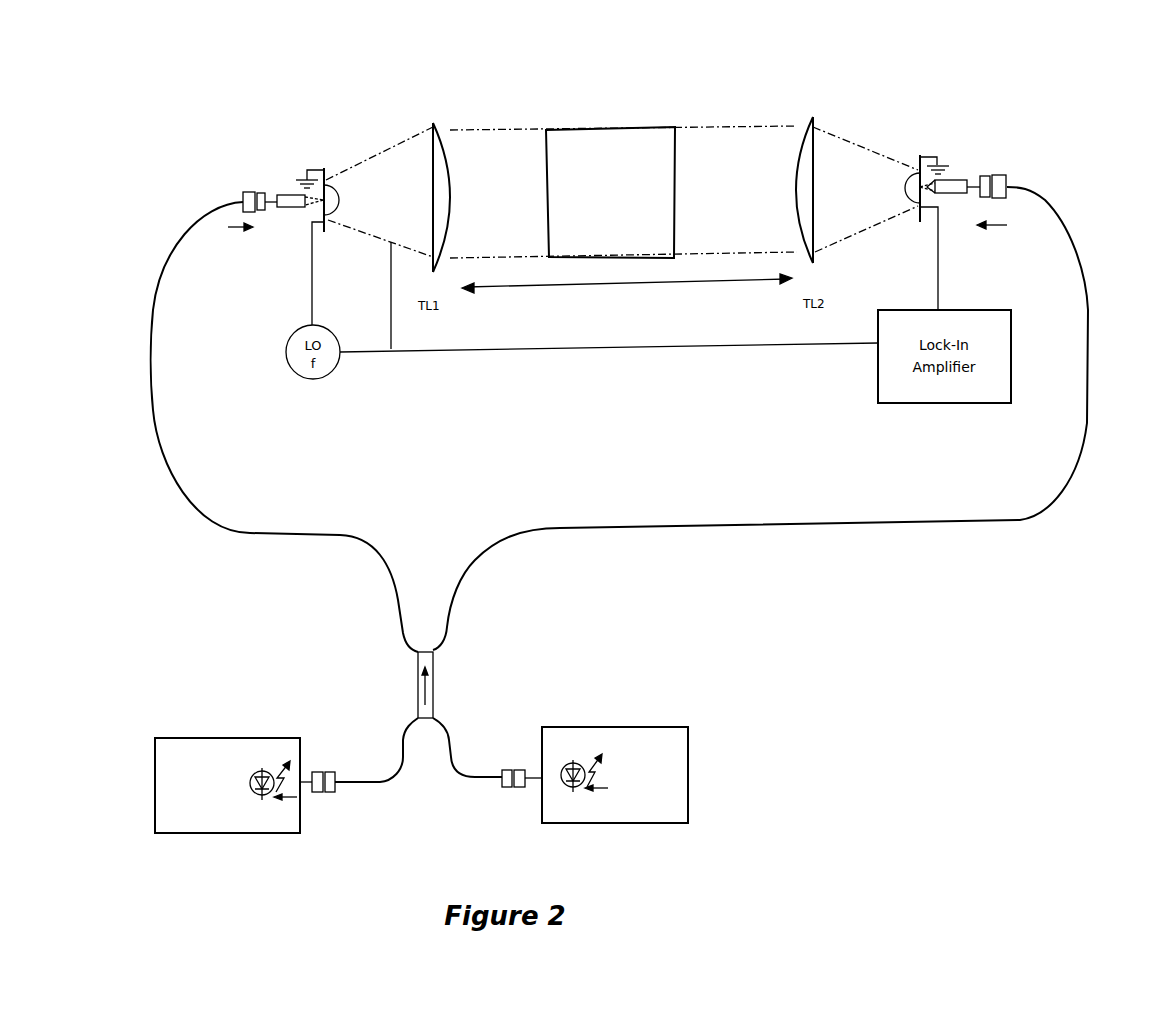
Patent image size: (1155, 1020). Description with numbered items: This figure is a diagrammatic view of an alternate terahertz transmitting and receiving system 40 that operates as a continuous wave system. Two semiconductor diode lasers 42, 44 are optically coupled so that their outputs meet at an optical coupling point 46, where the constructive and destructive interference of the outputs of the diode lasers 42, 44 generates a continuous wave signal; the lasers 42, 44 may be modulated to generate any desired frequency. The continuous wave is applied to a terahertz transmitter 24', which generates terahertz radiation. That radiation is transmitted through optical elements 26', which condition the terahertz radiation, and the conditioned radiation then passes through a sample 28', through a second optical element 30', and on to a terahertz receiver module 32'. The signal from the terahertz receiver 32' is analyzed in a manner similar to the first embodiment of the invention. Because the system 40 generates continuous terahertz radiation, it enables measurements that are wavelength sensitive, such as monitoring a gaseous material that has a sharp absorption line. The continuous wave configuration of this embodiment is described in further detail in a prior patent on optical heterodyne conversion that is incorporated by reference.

The terahertz transmitter 24' is at (262, 216).
The optical elements 26' is at (469, 176).
The sample 28' is at (626, 234).
The second optical element 30' is at (842, 167).
The terahertz receiver module 32' is at (972, 201).
The system 40 is at (1053, 132).
The semiconductor diode laser 42 is at (255, 833).
The semiconductor diode laser 44 is at (688, 807).
The optical coupling point 46 is at (435, 660).